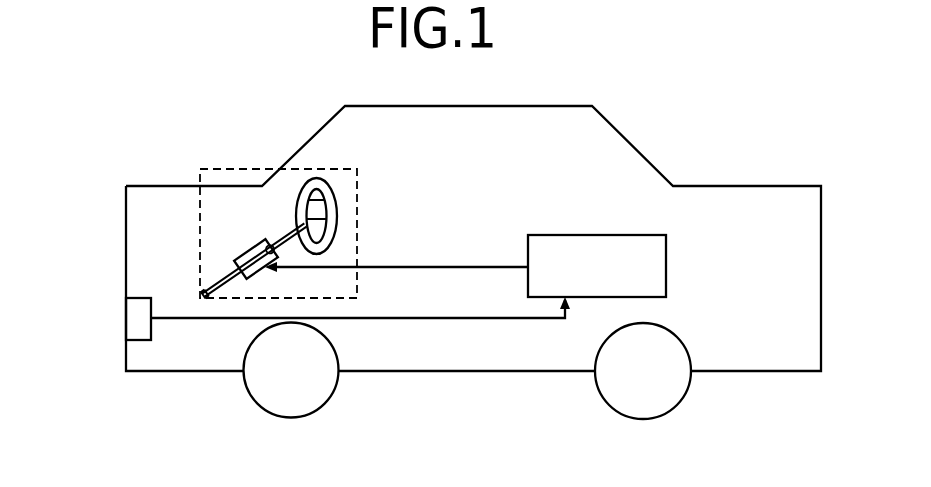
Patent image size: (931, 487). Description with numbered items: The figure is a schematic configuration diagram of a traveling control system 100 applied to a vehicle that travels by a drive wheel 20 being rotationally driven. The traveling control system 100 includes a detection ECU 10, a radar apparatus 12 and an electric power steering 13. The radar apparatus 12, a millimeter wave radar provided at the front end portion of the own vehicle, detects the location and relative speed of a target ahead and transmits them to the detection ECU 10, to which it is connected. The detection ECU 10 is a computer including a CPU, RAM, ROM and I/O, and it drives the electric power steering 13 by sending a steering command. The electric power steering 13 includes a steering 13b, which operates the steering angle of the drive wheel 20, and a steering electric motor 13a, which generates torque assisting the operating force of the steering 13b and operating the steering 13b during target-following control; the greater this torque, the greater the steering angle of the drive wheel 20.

The traveling control system 100 is at (648, 142).
The detection ECU 10 is at (565, 235).
The radar apparatus 12 is at (135, 316).
The electric power steering 13 is at (215, 168).
The steering electric motor 13a is at (248, 256).
The steering 13b is at (302, 189).
The drive wheel 20 is at (327, 402).